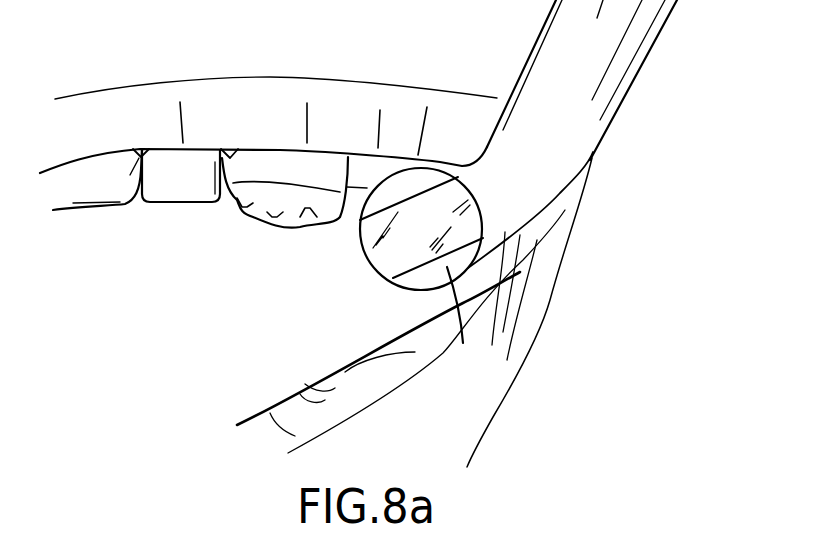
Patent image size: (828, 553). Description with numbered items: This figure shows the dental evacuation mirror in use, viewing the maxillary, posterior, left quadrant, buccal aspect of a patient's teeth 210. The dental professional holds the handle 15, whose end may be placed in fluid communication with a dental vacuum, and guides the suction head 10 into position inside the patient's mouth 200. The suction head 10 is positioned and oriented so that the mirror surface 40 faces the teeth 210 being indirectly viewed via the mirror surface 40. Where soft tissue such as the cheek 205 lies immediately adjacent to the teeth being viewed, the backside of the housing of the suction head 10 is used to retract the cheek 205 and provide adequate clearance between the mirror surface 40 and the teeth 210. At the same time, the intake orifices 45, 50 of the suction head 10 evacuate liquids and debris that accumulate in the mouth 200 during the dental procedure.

The suction head 10 is at (462, 236).
The handle 15 is at (587, 72).
The mirror surface 40 is at (427, 203).
The intake orifice 45 is at (463, 343).
The intake orifice 50 is at (393, 187).
The mouth 200 is at (200, 279).
The cheek 205 is at (557, 240).
The teeth 210 is at (322, 167).